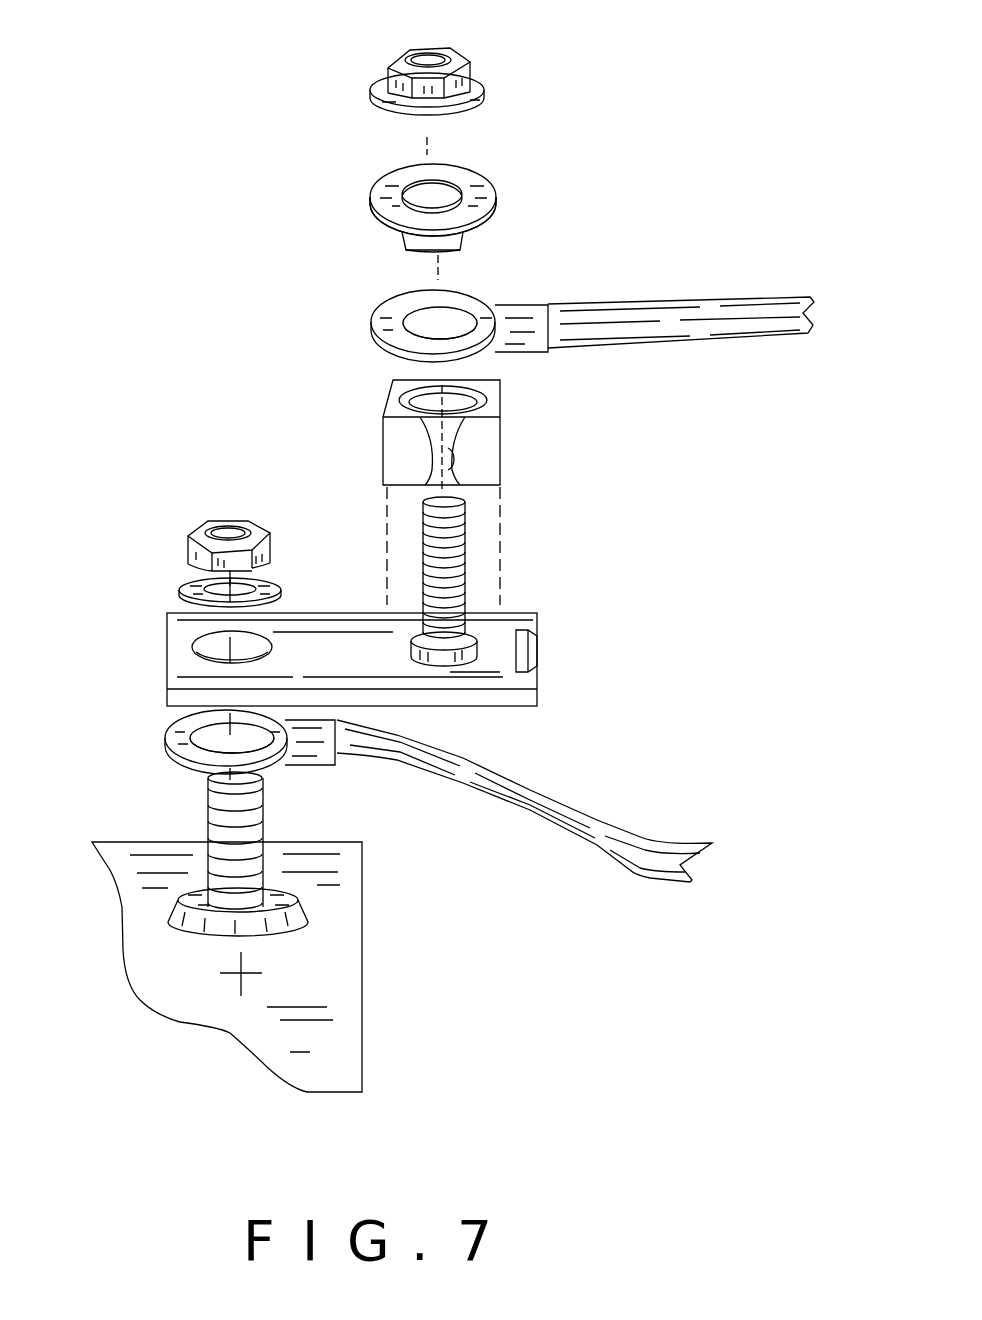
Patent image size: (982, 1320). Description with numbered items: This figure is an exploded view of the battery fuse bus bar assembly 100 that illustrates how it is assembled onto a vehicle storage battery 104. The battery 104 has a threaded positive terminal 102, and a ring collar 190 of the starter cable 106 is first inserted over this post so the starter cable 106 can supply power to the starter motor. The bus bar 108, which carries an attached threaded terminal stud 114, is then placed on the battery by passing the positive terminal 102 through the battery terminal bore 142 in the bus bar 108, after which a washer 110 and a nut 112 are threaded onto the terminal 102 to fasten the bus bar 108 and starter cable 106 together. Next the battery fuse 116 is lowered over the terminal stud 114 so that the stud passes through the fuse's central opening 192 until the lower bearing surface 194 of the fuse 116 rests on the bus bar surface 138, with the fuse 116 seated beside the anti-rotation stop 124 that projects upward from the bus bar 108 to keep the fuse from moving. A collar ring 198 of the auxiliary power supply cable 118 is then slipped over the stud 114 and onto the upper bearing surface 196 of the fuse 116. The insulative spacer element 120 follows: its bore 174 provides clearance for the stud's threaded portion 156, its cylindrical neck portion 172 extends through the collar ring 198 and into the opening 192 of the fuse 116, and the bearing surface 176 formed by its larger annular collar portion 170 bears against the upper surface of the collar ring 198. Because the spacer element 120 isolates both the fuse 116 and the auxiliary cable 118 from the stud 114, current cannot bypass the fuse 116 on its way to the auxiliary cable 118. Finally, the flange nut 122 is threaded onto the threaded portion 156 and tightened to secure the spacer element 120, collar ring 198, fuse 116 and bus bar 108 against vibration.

The battery fuse bus bar assembly 100 is at (192, 118).
The positive terminal 102 is at (207, 812).
The vehicle storage battery 104 is at (340, 1002).
The starter cable 106 is at (525, 800).
The bus bar 108 is at (427, 689).
The washer 110 is at (186, 590).
The nut 112 is at (198, 525).
The threaded terminal stud 114 is at (468, 576).
The battery fuse 116 is at (500, 428).
The auxiliary power supply cable 118 is at (668, 335).
The insulative spacer element 120 is at (487, 180).
The flange nut 122 is at (483, 65).
The anti-rotation stop 124 is at (540, 652).
The bus bar surface 138 is at (318, 647).
The battery terminal bore 142 is at (197, 648).
The threaded portion 156 is at (470, 512).
The collar portion 170 is at (390, 192).
The neck portion 172 is at (402, 248).
The bore 174 is at (430, 190).
The bearing surface 176 is at (483, 220).
The ring collar 190 is at (186, 736).
The central opening 192 is at (395, 385).
The lower bearing surface 194 is at (402, 485).
The upper bearing surface 196 is at (505, 386).
The collar ring 198 is at (392, 322).